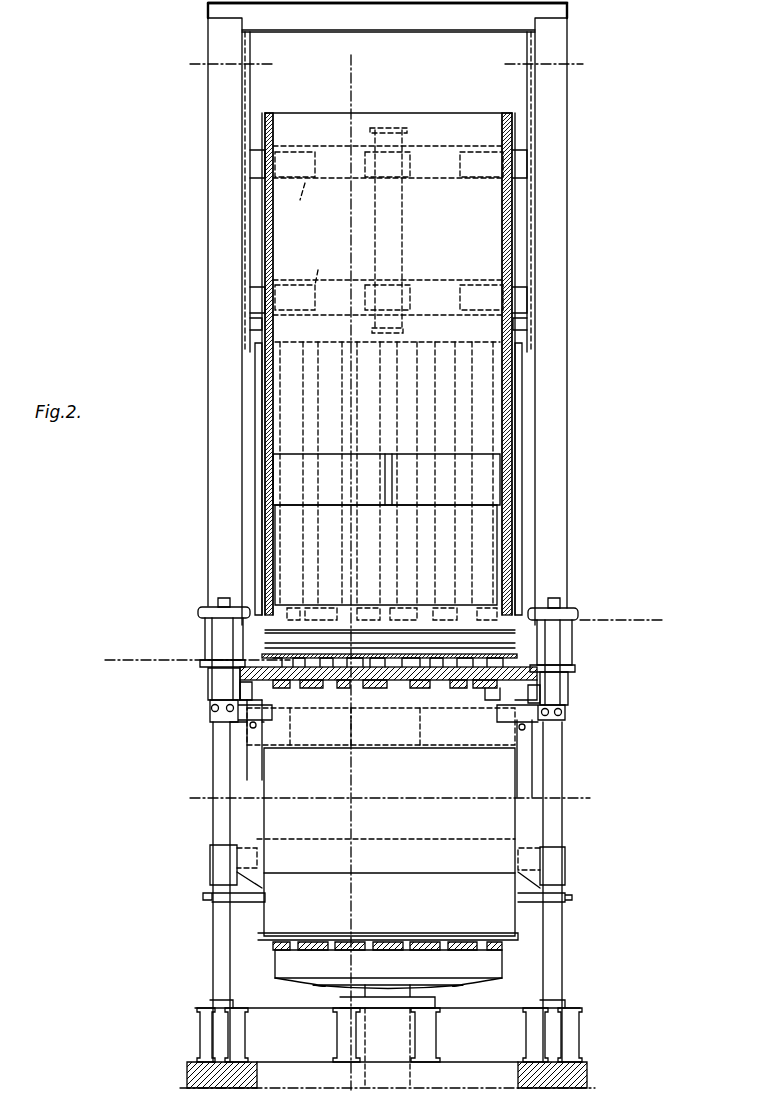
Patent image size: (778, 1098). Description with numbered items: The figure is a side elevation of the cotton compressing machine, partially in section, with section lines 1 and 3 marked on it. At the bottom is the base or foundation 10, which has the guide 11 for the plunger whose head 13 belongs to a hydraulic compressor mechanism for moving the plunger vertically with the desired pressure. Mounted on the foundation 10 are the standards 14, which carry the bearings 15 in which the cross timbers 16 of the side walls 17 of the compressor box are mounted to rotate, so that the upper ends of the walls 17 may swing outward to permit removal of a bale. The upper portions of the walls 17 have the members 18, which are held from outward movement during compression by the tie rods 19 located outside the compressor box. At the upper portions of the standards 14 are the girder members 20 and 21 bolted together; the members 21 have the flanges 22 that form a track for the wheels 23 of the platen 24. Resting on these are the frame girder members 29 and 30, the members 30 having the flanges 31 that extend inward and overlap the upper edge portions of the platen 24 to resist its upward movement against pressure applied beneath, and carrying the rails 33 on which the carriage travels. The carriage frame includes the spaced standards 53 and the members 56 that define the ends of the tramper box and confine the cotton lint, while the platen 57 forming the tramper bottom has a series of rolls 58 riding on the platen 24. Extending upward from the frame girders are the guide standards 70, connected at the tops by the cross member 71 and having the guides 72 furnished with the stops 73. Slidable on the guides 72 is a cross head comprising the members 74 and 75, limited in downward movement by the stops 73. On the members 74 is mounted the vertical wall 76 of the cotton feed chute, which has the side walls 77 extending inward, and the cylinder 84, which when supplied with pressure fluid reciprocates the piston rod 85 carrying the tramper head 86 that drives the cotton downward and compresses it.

The section line 1 is at (386, 569).
The section line 3 is at (382, 641).
The base or foundation 10 is at (580, 1037).
The guide 11 is at (403, 1092).
The head 13 is at (462, 978).
The standards 14 is at (215, 808).
The bearings 15 is at (208, 893).
The cross timbers 16 is at (399, 837).
The side walls 17 is at (507, 822).
The members 18 is at (245, 740).
The tie rods 19 is at (253, 735).
The girder members 20 is at (213, 684).
The girder members 21 is at (232, 690).
The flanges 22 is at (235, 712).
The wheels 23 is at (268, 715).
The platen 24 is at (370, 674).
The frame girder members 29 is at (205, 630).
The frame girder members 30 is at (215, 650).
The flanges 31 is at (305, 682).
The rails 33 is at (205, 667).
The standards 53 is at (318, 362).
The members 56 is at (262, 418).
The platen 57 is at (490, 682).
The rolls 58 is at (337, 665).
The guide standards 70 is at (222, 382).
The cross member 71 is at (423, 32).
The guides 72 is at (243, 222).
The stops 73 is at (248, 325).
The cross head members 74 is at (308, 181).
The cross head members 75 is at (253, 296).
The vertical wall 76 is at (420, 118).
The side walls 77 is at (265, 205).
The cylinder 84 is at (402, 240).
The piston rod 85 is at (387, 490).
The tramper head 86 is at (540, 520).